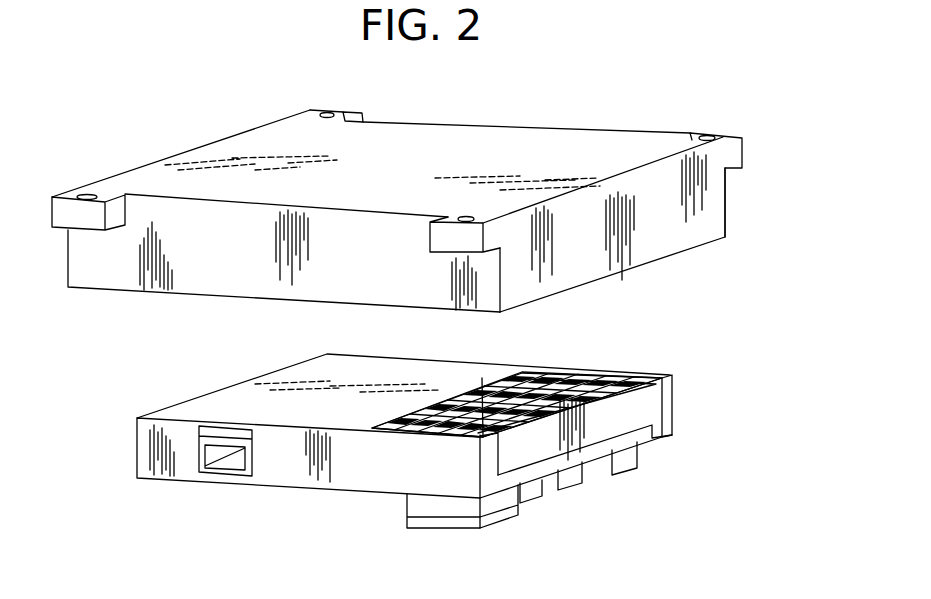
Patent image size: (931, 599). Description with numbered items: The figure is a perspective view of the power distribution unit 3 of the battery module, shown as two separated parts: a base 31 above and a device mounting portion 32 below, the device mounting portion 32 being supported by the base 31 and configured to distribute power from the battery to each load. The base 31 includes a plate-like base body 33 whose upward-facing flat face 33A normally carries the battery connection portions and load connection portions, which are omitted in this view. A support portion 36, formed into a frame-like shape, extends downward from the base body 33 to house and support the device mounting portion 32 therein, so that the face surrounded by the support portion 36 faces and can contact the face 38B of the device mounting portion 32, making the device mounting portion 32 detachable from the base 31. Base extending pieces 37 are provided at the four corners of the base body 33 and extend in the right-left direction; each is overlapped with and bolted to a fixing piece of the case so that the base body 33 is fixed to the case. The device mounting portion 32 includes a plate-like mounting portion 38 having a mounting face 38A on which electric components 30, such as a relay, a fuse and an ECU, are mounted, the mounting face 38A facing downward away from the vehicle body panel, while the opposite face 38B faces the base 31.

The power distribution unit 3 is at (803, 198).
The base 31 is at (727, 205).
The device mounting portion 32 is at (673, 389).
The base body 33 is at (615, 152).
The flat face 33A is at (356, 175).
The support portion 36 is at (718, 218).
The base extending pieces 37 is at (352, 112).
The mounting portion 38 is at (665, 410).
The mounting face 38A is at (663, 438).
The face 38B is at (482, 378).
The electric components 30 is at (552, 498).